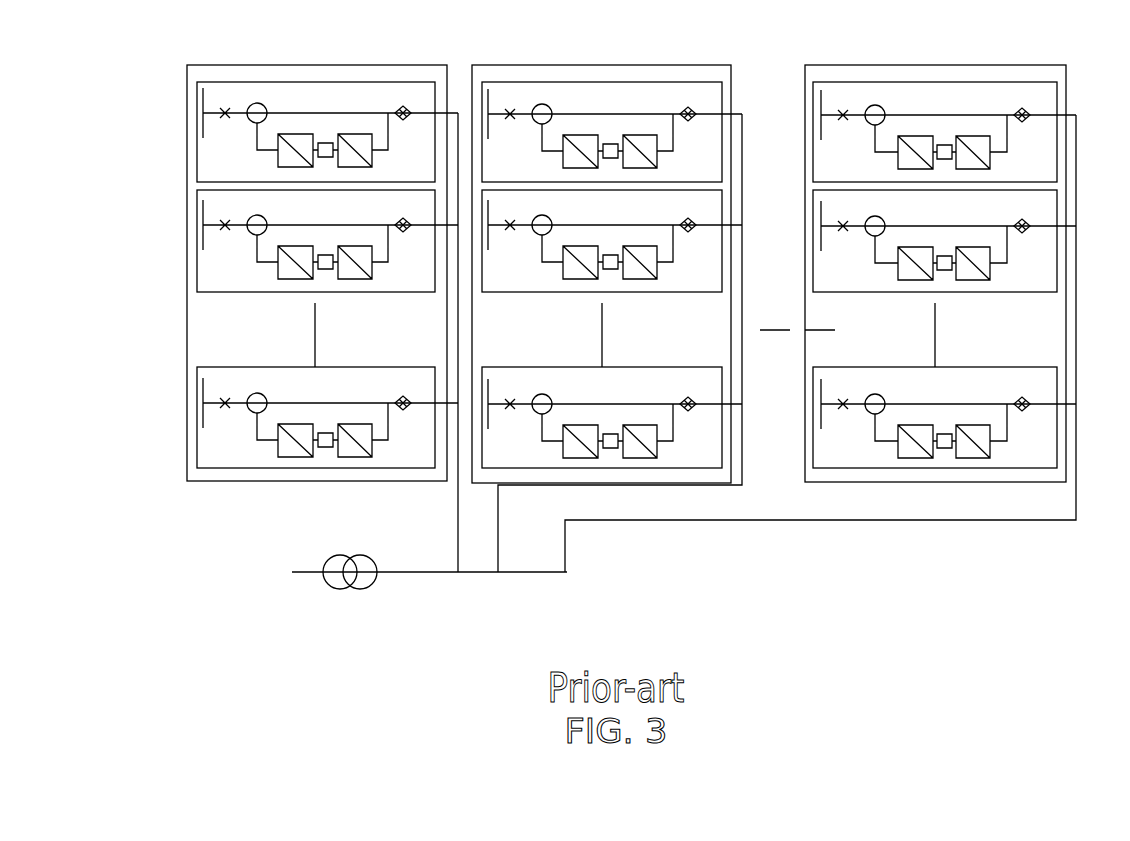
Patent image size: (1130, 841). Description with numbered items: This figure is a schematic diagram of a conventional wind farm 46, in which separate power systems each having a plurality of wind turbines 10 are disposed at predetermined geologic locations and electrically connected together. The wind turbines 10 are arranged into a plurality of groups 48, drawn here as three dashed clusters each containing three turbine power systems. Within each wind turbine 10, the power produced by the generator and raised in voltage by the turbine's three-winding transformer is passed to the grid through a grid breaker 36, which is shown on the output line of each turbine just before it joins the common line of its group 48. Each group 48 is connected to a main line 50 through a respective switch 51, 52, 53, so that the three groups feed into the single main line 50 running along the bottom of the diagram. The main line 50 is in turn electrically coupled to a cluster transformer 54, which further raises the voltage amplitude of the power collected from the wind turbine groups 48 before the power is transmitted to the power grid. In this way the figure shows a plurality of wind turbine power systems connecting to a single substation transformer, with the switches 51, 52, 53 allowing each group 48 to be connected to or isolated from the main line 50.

The wind farm 46 is at (1092, 79).
The group 48 is at (240, 481).
The wind turbine 10 is at (197, 143).
The grid breaker 36 is at (696, 248).
The switch 51 is at (456, 548).
The switch 52 is at (496, 550).
The switch 53 is at (562, 548).
The main line 50 is at (550, 576).
The cluster transformer 54 is at (350, 555).